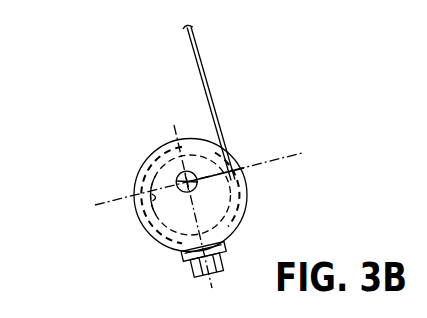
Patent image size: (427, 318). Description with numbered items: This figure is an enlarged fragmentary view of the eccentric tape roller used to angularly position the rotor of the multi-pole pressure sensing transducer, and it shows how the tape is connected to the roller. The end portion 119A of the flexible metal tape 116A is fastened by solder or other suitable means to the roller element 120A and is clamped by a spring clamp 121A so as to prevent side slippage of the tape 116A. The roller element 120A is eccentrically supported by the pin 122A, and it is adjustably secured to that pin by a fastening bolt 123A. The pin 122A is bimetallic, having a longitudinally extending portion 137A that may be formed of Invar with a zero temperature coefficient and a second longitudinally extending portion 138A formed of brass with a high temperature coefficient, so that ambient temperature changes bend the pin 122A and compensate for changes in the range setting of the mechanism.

The flexible metal tape 116A is at (203, 75).
The end portion of flexible metal tape 119A is at (160, 193).
The roller element 120A is at (156, 150).
The spring clamp 121A is at (252, 206).
The pin 122A is at (189, 171).
The fastening bolt 123A is at (193, 263).
The longitudinally extending portion 137A is at (196, 177).
The second longitudinally extending portion 138A is at (176, 181).